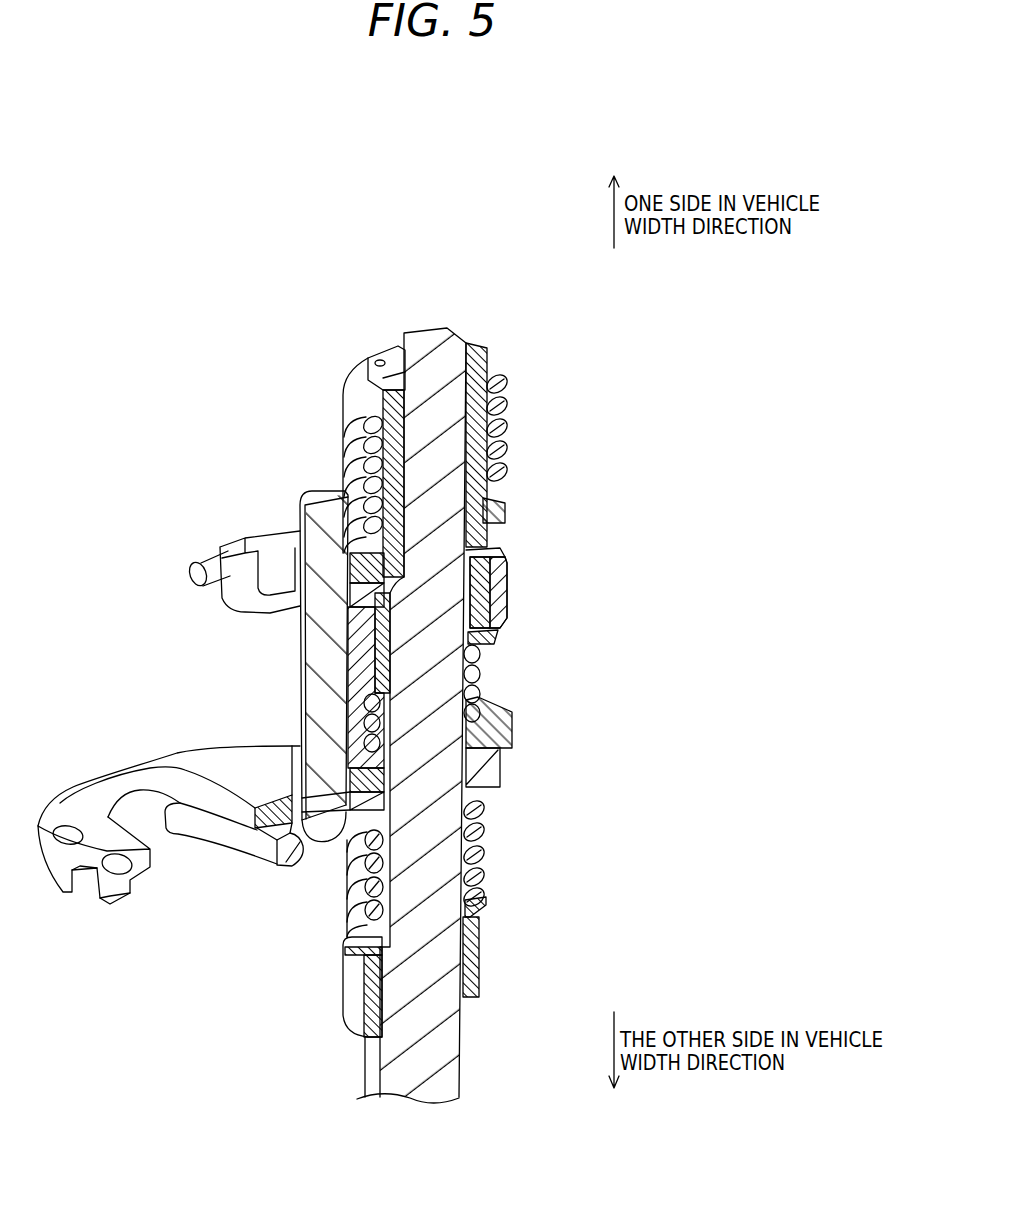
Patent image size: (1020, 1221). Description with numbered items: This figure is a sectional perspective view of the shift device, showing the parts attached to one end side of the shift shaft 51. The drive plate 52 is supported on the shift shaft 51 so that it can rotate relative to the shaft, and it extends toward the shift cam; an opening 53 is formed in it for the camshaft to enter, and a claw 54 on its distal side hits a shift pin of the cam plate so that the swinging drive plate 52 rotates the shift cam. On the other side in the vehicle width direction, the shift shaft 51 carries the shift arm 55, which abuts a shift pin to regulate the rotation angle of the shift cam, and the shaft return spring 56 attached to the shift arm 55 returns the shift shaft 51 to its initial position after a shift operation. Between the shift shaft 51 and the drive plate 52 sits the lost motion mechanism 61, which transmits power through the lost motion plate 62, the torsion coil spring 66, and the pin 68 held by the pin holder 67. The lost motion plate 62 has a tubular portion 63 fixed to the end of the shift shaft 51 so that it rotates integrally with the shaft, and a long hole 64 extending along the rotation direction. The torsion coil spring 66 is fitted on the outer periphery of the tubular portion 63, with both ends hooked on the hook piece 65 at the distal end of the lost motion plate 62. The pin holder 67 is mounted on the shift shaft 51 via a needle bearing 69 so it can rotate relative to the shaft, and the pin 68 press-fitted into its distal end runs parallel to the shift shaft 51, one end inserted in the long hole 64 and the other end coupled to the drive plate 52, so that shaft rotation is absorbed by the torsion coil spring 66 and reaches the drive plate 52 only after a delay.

The shift shaft 51 is at (445, 459).
The drive plate 52 is at (227, 758).
The opening 53 is at (131, 829).
The claw 54 is at (73, 884).
The shift arm 55 is at (273, 857).
The shaft return spring 56 is at (483, 832).
The lost motion mechanism 61 is at (524, 372).
The lost motion plate 62 is at (507, 521).
The tubular portion 63 is at (477, 358).
The long hole 64 is at (292, 566).
The hook piece 65 is at (237, 542).
The torsion coil spring 66 is at (503, 425).
The pin holder 67 is at (484, 592).
The pin 68 is at (317, 490).
The needle bearing 69 is at (478, 605).